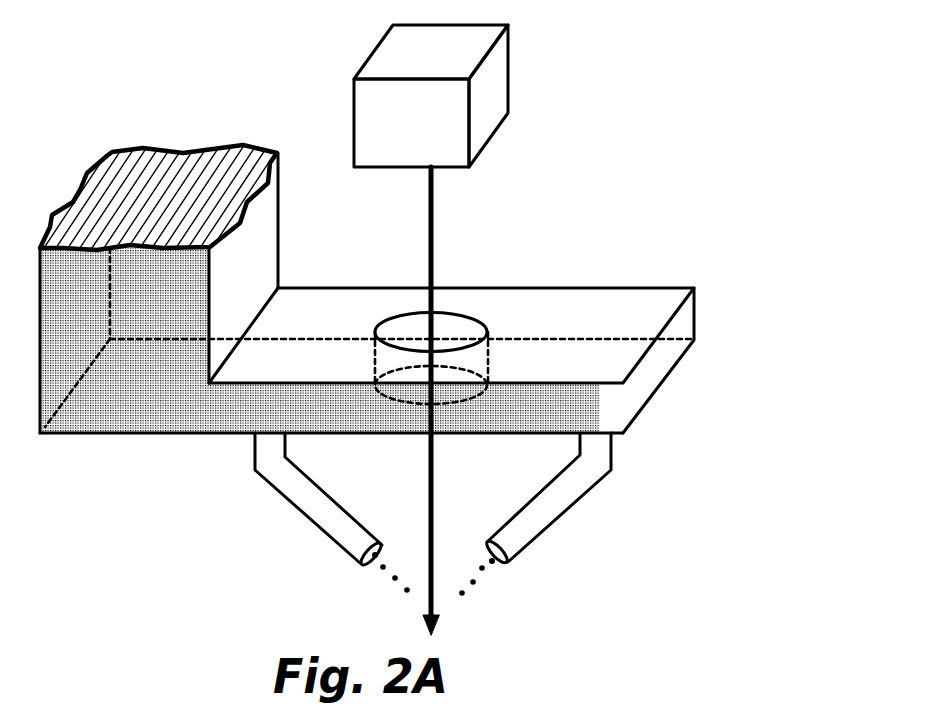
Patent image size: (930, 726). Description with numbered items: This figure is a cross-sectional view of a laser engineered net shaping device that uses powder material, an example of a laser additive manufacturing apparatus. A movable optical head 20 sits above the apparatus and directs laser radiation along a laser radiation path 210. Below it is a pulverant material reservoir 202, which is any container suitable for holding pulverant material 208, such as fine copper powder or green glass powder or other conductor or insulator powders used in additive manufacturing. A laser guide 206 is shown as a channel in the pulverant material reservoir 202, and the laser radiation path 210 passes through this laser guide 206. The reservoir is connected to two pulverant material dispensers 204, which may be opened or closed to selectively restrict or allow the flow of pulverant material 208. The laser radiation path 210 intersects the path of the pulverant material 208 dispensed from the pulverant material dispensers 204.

The movable optical head 20 is at (497, 77).
The pulverant material reservoir 202 is at (115, 402).
The pulverant material dispensers 204 is at (298, 502).
The laser guide 206 is at (478, 322).
The pulverant material 208 is at (382, 577).
The laser radiation path 210 is at (438, 232).